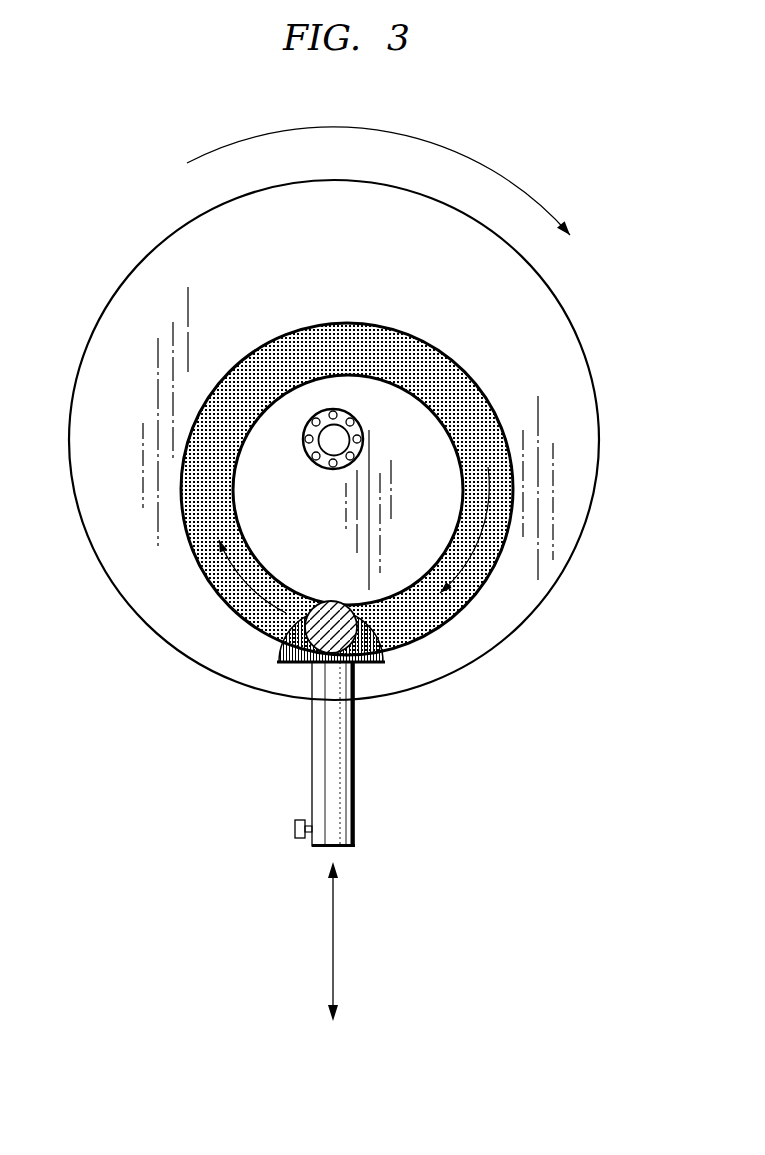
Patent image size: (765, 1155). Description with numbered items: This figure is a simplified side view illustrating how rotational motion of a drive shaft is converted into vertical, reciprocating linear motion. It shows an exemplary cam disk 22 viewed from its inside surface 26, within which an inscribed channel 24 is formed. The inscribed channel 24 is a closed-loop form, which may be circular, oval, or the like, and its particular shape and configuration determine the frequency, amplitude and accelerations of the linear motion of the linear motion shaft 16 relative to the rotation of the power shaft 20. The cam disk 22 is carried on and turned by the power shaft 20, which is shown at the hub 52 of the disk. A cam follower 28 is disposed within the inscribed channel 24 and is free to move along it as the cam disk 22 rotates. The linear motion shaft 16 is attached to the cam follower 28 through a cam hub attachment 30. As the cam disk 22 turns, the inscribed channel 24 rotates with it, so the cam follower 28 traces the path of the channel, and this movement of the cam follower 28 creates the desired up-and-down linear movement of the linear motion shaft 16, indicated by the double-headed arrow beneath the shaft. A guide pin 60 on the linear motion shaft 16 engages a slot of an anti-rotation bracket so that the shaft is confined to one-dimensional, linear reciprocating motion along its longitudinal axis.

The linear motion shaft 16 is at (340, 754).
The power shaft 20 is at (333, 440).
The cam disk 22 is at (122, 234).
The inscribed channel 24 is at (488, 441).
The inside surface 26 is at (90, 380).
The cam follower 28 is at (318, 647).
The cam hub attachment 30 is at (370, 652).
The hub 52 is at (335, 439).
The guide pin 60 is at (292, 826).